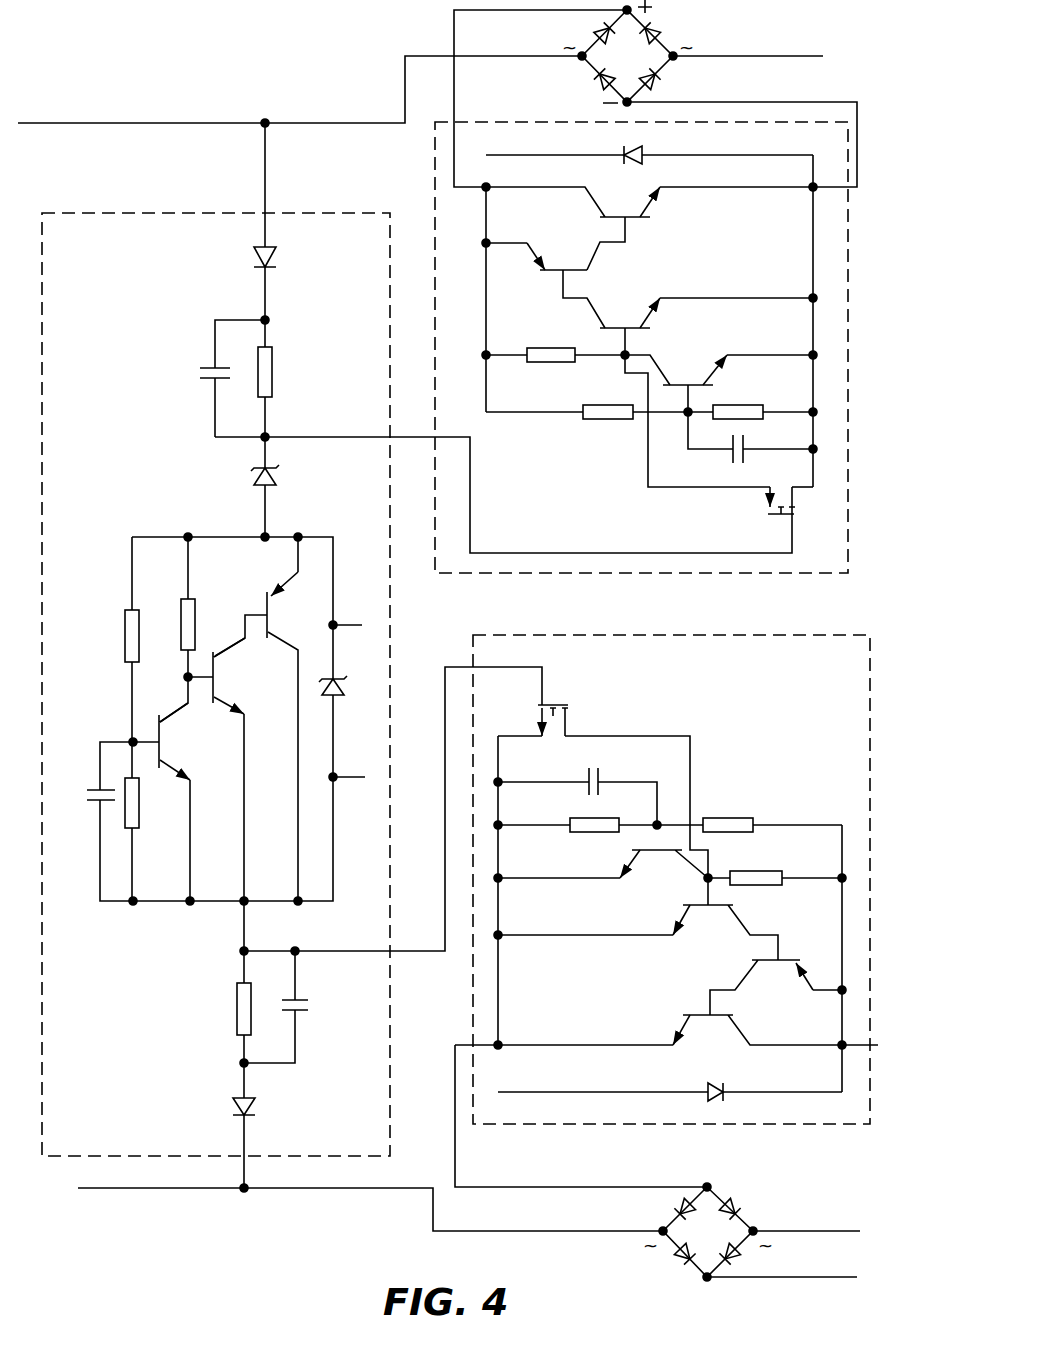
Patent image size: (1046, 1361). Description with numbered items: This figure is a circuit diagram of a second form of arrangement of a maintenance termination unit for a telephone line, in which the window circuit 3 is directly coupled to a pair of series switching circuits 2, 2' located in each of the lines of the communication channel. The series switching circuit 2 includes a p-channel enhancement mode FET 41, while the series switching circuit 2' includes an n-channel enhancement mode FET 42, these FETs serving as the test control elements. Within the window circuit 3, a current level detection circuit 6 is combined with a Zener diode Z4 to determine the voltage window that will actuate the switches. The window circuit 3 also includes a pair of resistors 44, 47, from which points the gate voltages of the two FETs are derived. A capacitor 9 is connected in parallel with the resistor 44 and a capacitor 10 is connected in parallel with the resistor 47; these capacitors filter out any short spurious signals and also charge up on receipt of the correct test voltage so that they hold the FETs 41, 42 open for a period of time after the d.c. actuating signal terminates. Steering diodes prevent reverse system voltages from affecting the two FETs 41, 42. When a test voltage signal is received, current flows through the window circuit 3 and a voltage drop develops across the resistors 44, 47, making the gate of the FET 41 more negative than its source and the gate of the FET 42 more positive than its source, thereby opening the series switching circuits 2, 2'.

The series switching circuit 2 is at (612, 347).
The series switching circuit 2' is at (643, 879).
The window circuit 3 is at (214, 676).
The current level detection circuit 6 is at (92, 528).
The capacitor 9 is at (205, 370).
The capacitor 10 is at (309, 1013).
The p-channel enhancement mode FET 41 is at (776, 516).
The n-channel enhancement mode FET 42 is at (560, 705).
The resistor 44 is at (273, 368).
The resistor 47 is at (237, 1010).
The Zener diode Z4 is at (280, 479).